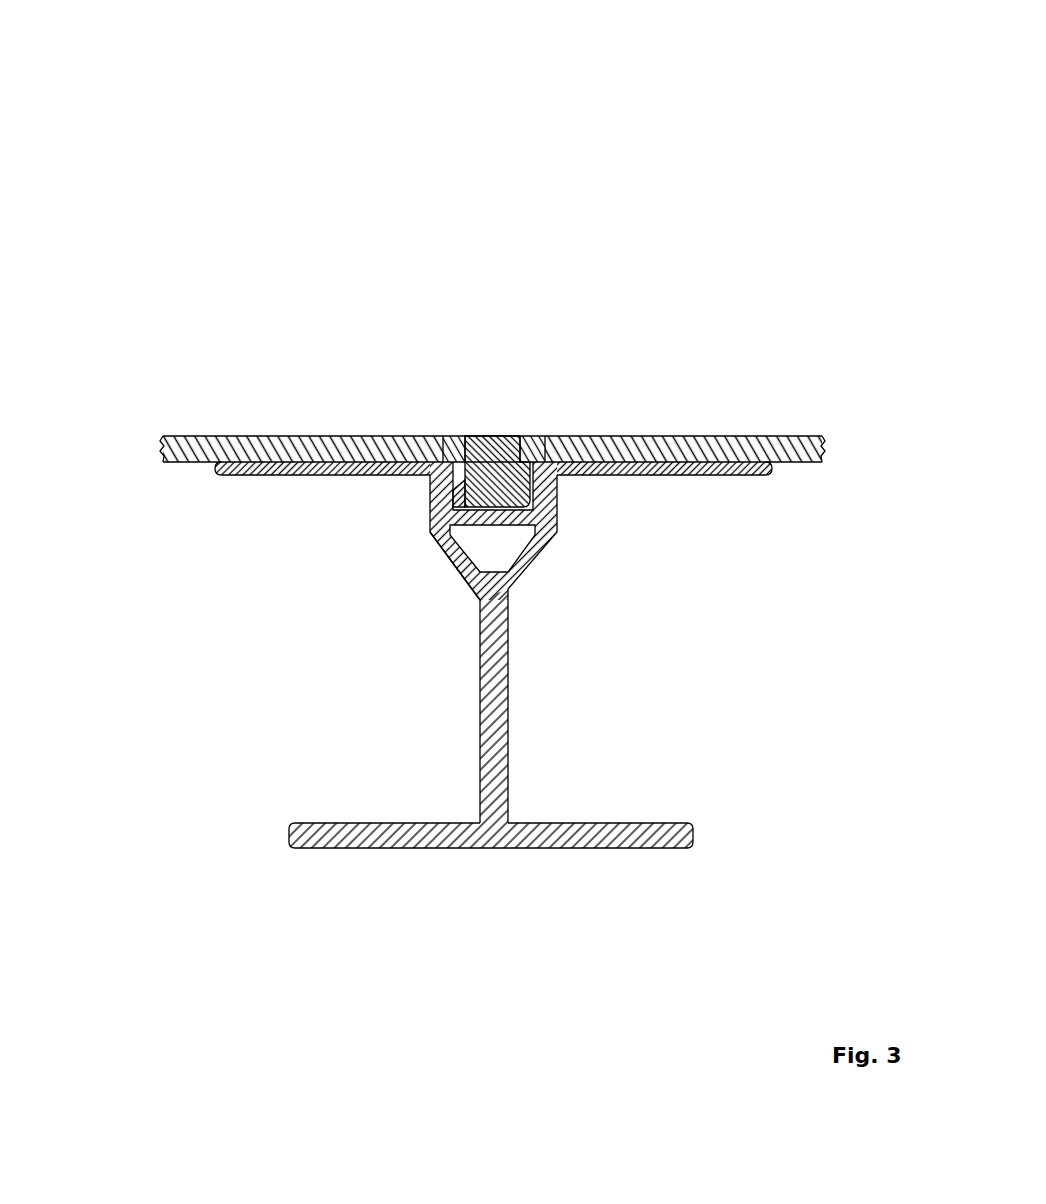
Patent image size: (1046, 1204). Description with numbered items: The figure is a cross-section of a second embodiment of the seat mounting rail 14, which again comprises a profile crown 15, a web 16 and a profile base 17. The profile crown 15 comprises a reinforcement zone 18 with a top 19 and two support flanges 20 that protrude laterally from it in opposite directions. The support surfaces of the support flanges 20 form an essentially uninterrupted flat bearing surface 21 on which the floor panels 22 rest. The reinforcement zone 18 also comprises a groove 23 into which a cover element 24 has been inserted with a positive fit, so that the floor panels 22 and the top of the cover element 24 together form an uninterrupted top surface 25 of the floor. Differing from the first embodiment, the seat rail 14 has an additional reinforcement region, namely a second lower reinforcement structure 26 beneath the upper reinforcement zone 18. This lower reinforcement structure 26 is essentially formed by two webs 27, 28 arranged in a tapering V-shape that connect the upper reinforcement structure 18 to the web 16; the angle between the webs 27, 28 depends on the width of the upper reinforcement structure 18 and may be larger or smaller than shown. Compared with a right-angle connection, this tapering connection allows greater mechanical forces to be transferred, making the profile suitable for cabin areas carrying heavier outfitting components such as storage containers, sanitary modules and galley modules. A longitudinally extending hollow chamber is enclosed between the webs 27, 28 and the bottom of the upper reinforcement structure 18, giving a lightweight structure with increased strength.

The seat mounting rail 14 is at (558, 137).
The profile crown 15 is at (152, 528).
The web 16 is at (507, 708).
The profile base 17 is at (693, 840).
The reinforcement zone 18 is at (545, 500).
The top 19 is at (452, 457).
The support flanges 20 is at (257, 472).
The flat bearing surface 21 is at (333, 465).
The floor panels 22 is at (223, 447).
The groove 23 is at (468, 496).
The cover element 24 is at (513, 448).
The uninterrupted top surface 25 is at (605, 272).
The lower reinforcement structure 26 is at (405, 578).
The web 27 is at (457, 572).
The web 28 is at (530, 563).